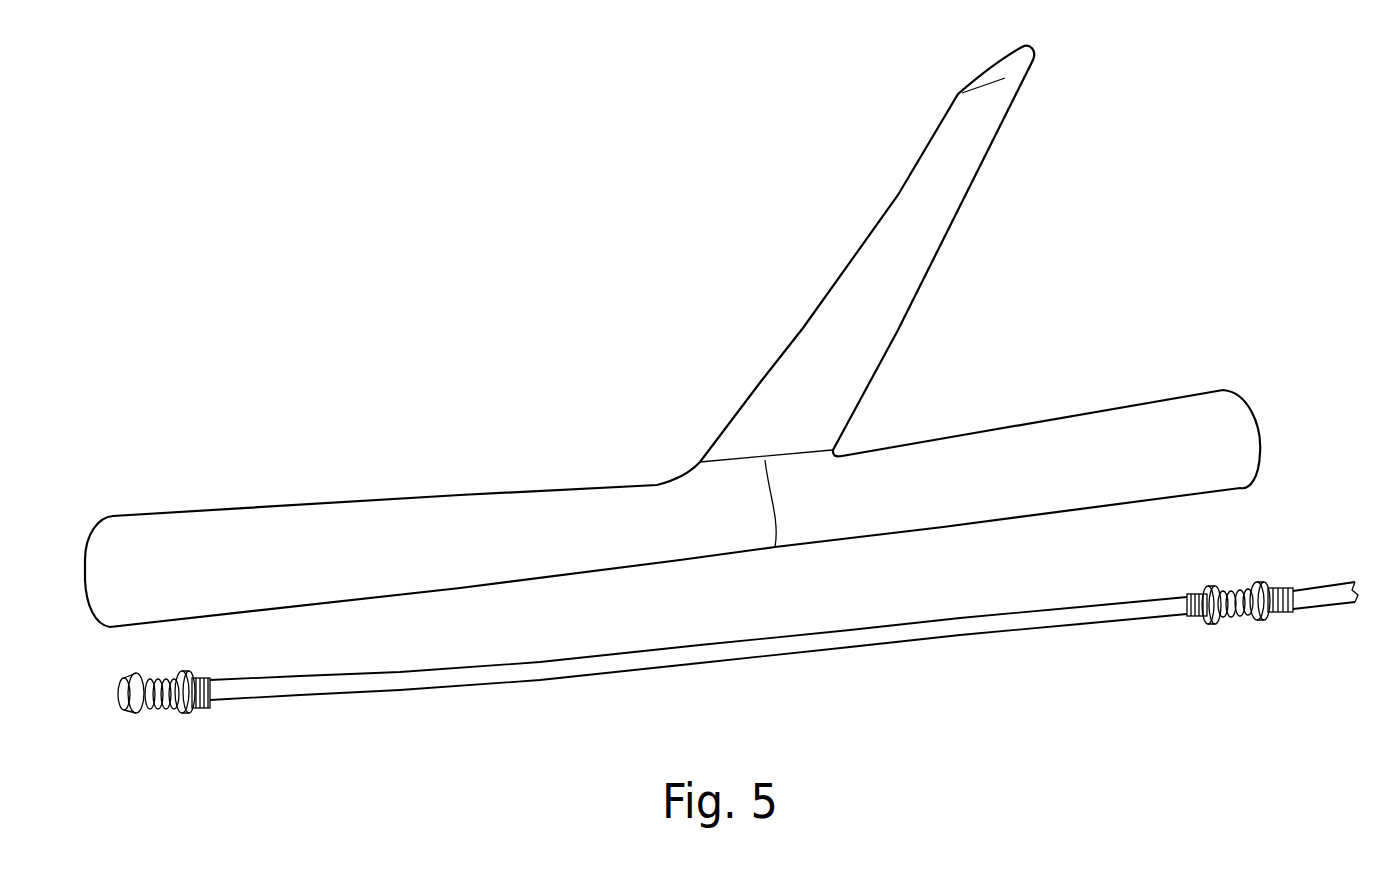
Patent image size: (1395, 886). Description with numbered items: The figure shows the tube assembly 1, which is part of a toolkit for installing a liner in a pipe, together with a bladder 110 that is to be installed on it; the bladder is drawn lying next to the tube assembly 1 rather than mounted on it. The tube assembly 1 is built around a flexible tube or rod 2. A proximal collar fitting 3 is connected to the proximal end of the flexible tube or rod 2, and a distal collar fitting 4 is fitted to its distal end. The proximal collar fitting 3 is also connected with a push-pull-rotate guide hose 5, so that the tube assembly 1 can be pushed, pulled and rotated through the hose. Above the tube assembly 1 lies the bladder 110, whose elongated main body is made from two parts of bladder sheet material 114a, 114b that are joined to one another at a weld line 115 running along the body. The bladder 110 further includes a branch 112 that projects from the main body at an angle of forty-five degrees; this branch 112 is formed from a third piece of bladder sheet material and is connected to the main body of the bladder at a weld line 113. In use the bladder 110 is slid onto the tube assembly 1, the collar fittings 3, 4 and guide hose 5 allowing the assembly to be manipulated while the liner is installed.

The tube assembly 1 is at (721, 422).
The flexible tube or rod 2 is at (593, 678).
The proximal collar fitting 3 is at (1240, 590).
The distal collar fitting 4 is at (162, 705).
The push-pull-rotate guide hose 5 is at (1322, 607).
The bladder 110 is at (478, 490).
The branch 112 is at (907, 196).
The weld line 113 is at (742, 448).
The bladder sheet material 114a is at (228, 522).
The bladder sheet material 114b is at (1098, 427).
The weld line 115 is at (943, 505).